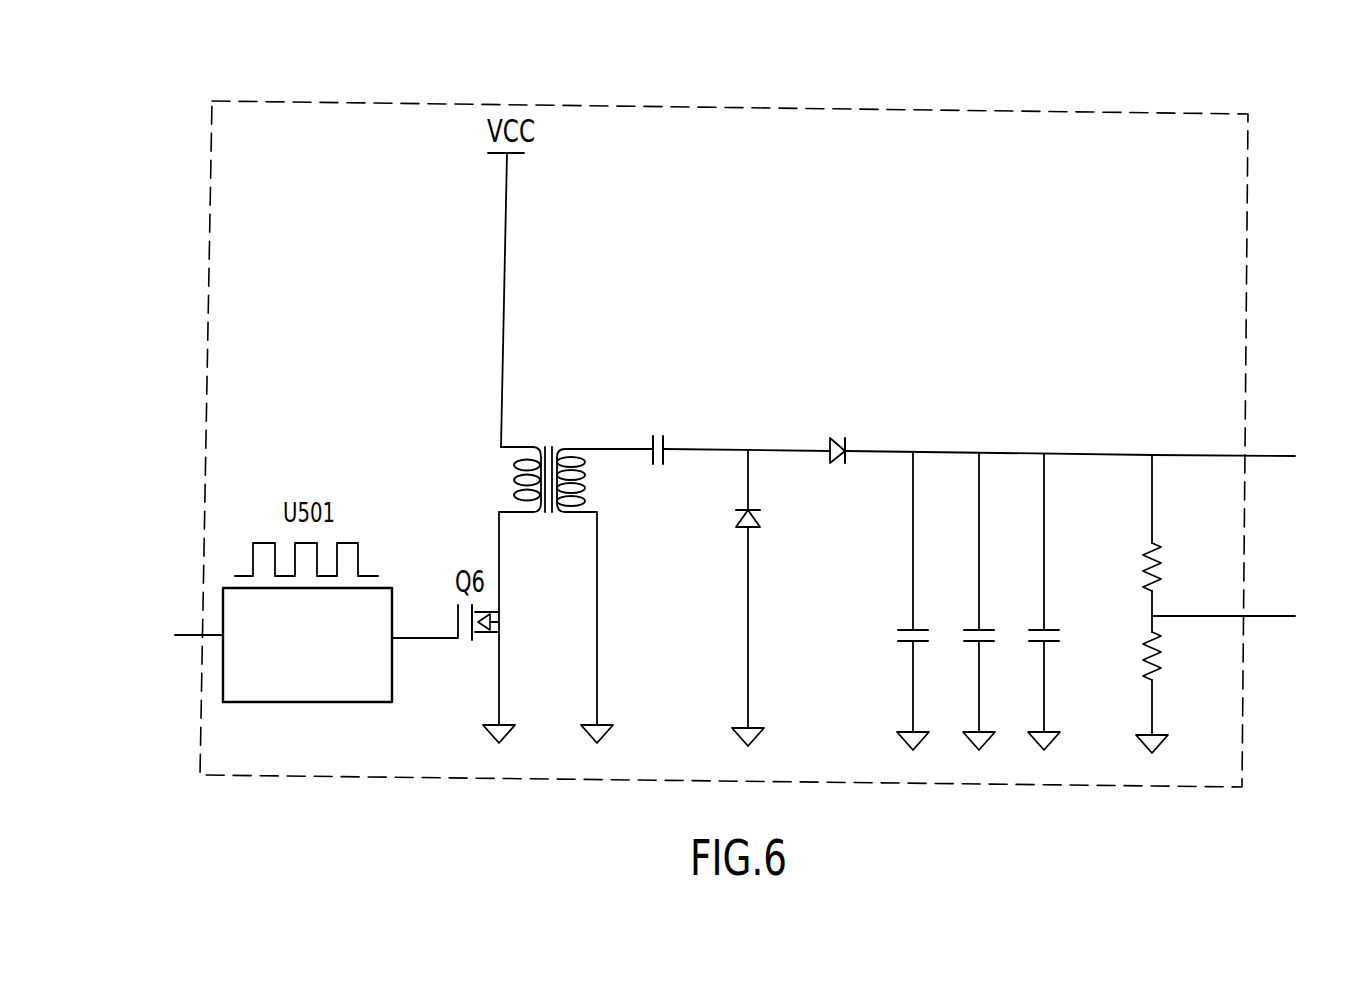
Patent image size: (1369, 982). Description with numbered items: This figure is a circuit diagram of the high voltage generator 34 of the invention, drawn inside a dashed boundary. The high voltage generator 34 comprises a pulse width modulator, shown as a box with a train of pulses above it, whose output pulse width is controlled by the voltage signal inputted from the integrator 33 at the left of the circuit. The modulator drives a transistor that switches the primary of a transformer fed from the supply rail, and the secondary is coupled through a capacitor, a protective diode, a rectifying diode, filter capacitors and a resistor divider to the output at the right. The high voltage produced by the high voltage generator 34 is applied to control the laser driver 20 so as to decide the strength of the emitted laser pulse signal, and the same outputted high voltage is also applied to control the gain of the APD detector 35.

The high voltage generator 34 is at (694, 108).
The APD detector 35 is at (1242, 454).
The laser driver 20 is at (1245, 614).
The integrator 33 is at (183, 635).